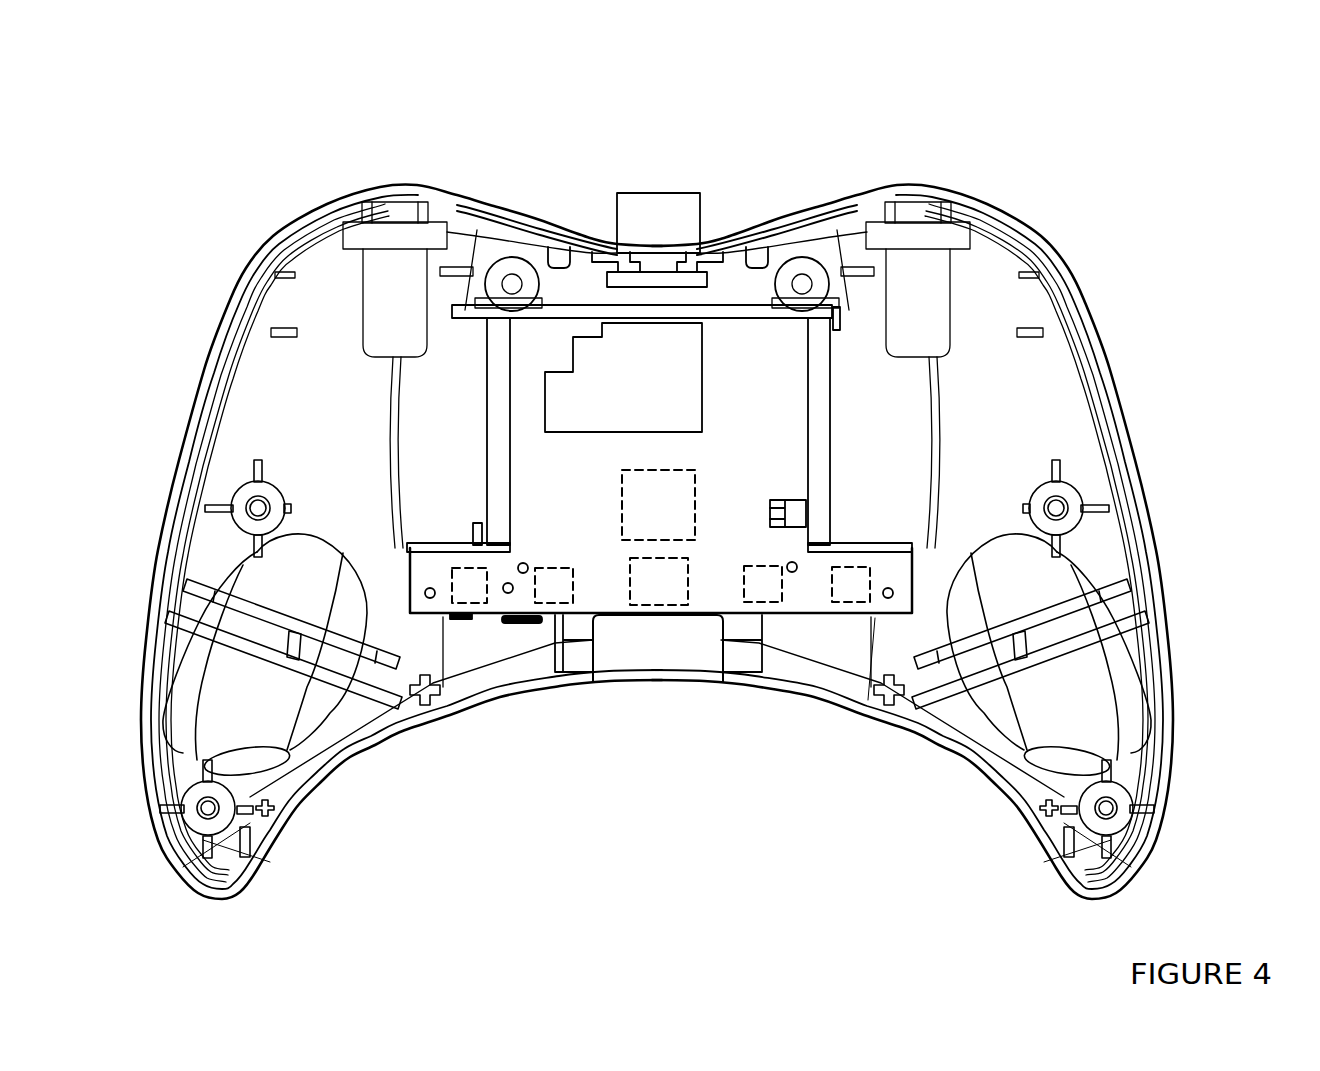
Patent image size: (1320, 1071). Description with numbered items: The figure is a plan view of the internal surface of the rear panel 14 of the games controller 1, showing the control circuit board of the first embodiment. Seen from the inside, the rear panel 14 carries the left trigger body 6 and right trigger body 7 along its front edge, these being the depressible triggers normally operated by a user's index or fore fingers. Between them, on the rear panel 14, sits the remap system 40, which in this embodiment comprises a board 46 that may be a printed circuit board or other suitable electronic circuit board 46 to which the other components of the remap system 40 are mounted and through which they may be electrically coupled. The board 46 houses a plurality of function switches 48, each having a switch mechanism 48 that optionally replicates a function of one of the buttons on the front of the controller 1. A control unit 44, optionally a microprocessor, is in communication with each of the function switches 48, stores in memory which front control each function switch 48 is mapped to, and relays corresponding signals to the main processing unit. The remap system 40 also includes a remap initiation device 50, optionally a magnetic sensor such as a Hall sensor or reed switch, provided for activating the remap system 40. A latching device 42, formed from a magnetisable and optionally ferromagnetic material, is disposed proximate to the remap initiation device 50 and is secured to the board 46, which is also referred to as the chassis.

The controller 1 is at (247, 111).
The left trigger body 6 is at (397, 212).
The right trigger body 7 is at (922, 212).
The rear panel 14 is at (1040, 367).
The remap system 40 is at (715, 410).
The latching device 42 is at (676, 513).
The control unit 44 is at (641, 347).
The electronic circuit board 46 is at (548, 485).
The function switch 48 is at (480, 602).
The remap initiation device 50 is at (648, 600).